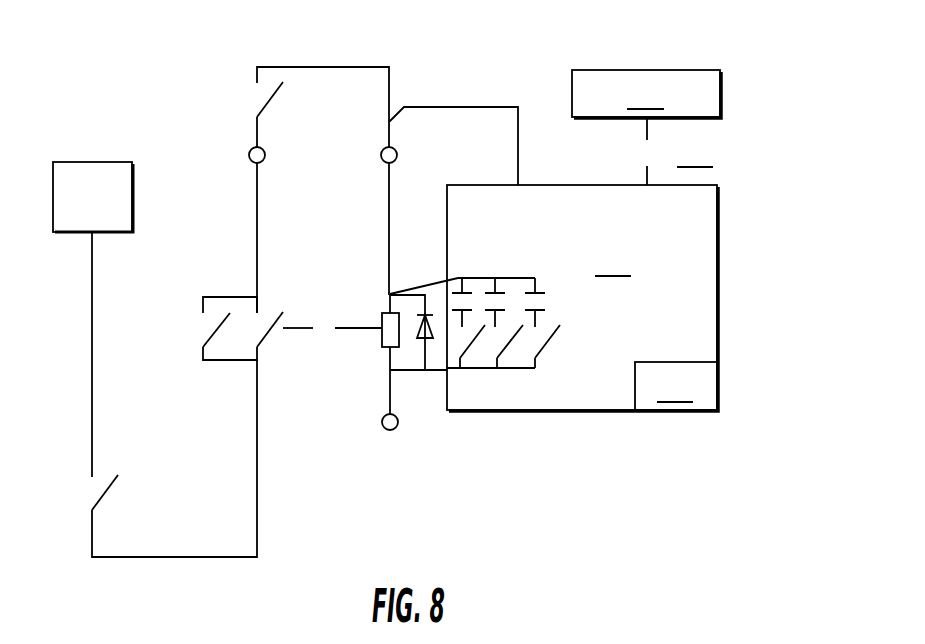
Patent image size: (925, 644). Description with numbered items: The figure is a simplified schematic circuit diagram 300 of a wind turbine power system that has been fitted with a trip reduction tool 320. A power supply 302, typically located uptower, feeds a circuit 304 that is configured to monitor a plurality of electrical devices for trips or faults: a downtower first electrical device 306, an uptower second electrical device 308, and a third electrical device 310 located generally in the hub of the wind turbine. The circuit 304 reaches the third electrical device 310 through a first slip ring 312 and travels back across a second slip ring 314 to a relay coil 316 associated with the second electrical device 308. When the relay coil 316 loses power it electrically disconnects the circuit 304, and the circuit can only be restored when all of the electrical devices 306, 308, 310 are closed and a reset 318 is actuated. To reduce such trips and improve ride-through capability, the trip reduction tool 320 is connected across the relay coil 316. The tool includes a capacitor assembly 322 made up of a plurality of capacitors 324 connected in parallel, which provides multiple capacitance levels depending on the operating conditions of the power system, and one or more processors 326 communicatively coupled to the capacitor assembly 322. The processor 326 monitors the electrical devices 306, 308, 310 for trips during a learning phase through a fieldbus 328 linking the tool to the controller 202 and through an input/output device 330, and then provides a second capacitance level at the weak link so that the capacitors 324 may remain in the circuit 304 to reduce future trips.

The circuit diagram 300 is at (762, 76).
The controller 202 is at (646, 94).
The power supply 302 is at (96, 144).
The circuit 304 is at (90, 350).
The first electrical device 306 is at (85, 493).
The second electrical device 308 is at (322, 316).
The third electrical device 310 is at (248, 93).
The first slip ring 312 is at (248, 146).
The second slip ring 314 is at (380, 146).
The relay coil 316 is at (409, 281).
The reset 318 is at (198, 329).
The trip reduction tool 320 is at (582, 298).
The capacitor assembly 322 is at (503, 254).
The capacitors 324 is at (553, 338).
The processor 326 is at (676, 386).
The fieldbus 328 is at (648, 151).
The input/output device 330 is at (483, 106).